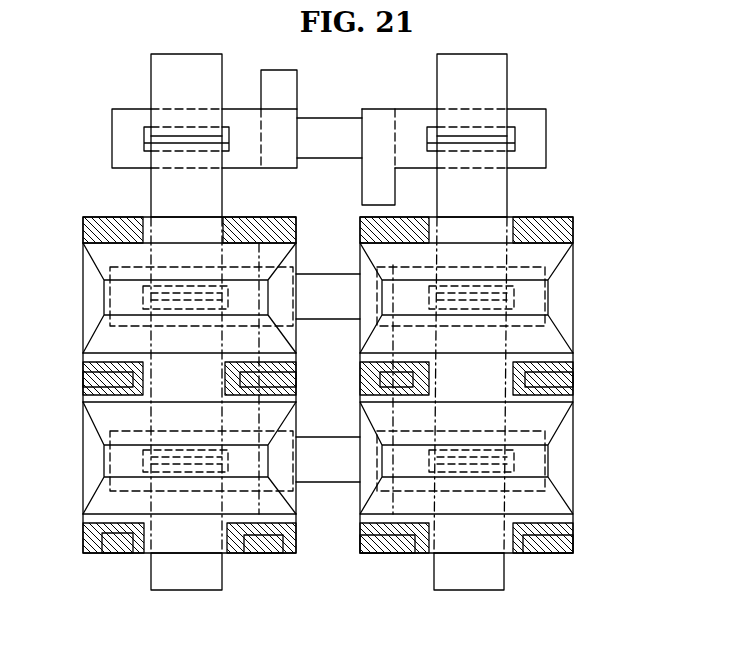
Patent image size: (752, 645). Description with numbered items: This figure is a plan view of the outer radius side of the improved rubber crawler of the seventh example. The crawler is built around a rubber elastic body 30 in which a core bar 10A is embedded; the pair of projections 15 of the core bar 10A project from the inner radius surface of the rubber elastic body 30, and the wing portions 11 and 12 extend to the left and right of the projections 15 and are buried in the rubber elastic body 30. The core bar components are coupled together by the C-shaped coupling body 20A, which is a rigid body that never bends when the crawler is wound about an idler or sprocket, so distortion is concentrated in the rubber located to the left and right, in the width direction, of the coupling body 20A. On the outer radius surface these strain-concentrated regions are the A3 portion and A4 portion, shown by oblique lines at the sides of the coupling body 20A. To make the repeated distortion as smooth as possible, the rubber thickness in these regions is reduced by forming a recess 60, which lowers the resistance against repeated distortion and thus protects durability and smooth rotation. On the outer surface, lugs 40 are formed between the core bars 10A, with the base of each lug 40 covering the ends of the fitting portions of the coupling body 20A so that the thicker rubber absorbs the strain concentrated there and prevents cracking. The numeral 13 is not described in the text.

The core bar 10A is at (336, 108).
The wing portion 11 is at (118, 133).
The wing portion 12 is at (541, 147).
The engaging clip 13 is at (147, 130).
The projection 15 is at (283, 77).
The coupling body 20A is at (165, 78).
The rubber elastic body 30 is at (490, 227).
The lug 40 is at (575, 452).
The recess 60 is at (90, 380).
The A3 portion A3 is at (97, 372).
The A4 portion A4 is at (284, 540).